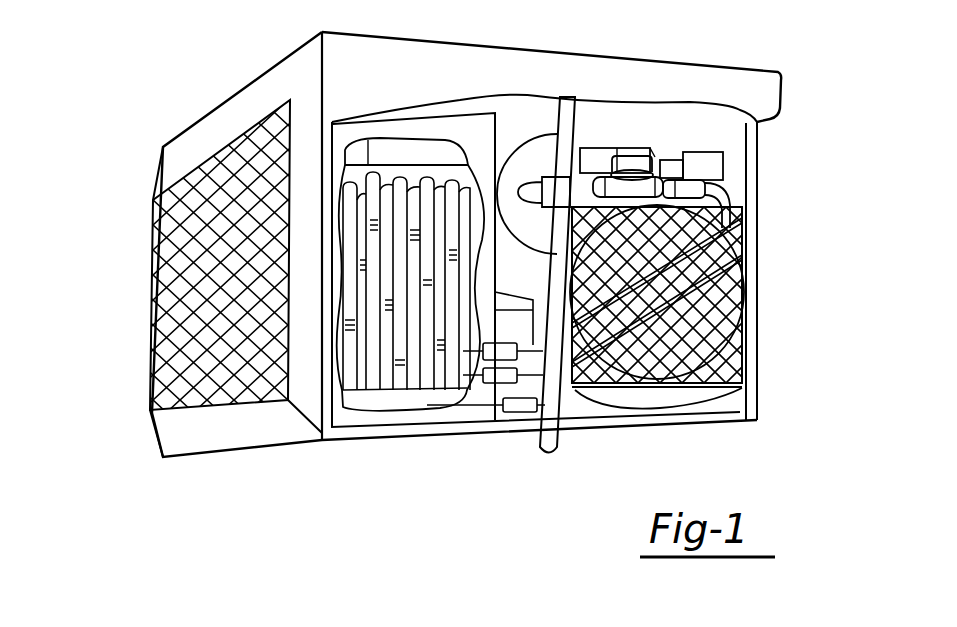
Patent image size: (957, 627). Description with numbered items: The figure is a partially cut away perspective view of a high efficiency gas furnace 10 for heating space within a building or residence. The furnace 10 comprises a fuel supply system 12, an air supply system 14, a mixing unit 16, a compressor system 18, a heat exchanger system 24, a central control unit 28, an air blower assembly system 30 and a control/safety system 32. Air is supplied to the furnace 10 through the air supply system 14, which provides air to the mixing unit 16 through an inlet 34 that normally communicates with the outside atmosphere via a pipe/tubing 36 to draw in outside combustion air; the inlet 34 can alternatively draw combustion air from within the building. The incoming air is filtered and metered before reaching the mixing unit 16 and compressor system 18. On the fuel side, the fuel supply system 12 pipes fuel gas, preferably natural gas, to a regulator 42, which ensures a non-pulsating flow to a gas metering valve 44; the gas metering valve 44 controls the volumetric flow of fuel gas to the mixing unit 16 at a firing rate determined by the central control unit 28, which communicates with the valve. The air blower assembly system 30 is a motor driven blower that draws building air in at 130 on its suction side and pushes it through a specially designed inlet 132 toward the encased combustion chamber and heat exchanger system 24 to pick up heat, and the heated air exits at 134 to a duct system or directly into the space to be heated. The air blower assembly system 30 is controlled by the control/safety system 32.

The high efficiency gas furnace 10 is at (193, 60).
The fuel supply system 12 is at (733, 212).
The air supply system 14 is at (557, 445).
The mixing unit 16 is at (570, 177).
The compressor system 18 is at (500, 143).
The heat exchanger system 24 is at (377, 397).
The central control unit 28 is at (633, 168).
The air blower assembly system 30 is at (740, 265).
The control/safety system 32 is at (710, 167).
The inlet 34 is at (630, 165).
The pipe/tubing 36 is at (563, 432).
The regulator 42 is at (693, 188).
The gas metering valve 44 is at (657, 157).
The blower air intake 130 is at (740, 340).
The inlet 132 is at (507, 363).
The heated air exit 134 is at (253, 293).